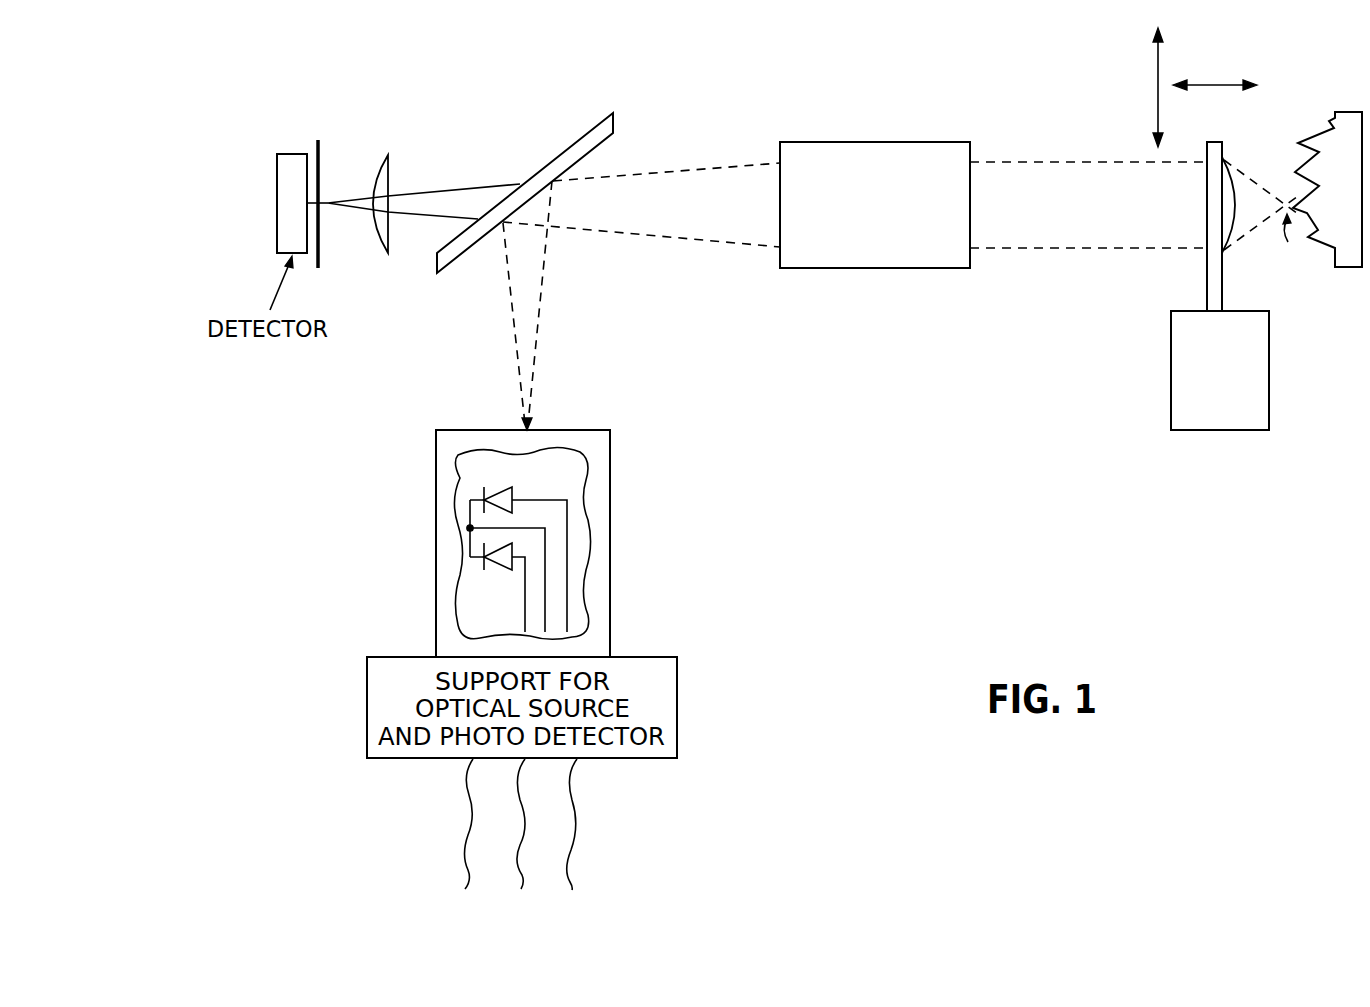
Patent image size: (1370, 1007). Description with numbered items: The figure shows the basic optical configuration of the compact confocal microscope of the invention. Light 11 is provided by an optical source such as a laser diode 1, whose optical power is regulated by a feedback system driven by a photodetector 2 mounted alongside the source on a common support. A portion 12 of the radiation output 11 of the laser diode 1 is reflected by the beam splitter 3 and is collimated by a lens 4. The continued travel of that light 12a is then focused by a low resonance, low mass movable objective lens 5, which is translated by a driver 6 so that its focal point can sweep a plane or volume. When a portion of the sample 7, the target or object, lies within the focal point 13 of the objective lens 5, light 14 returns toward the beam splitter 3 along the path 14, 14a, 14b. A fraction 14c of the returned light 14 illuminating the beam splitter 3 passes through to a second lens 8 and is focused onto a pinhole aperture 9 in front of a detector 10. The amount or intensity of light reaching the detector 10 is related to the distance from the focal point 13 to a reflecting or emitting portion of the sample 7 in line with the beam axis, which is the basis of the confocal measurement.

The laser diode 1 is at (502, 568).
The photodetector 2 is at (502, 491).
The beam splitter 3 is at (569, 144).
The lens 4 is at (880, 142).
The movable objective lens 5 is at (1213, 140).
The driver 6 is at (1171, 397).
The sample 7 is at (1348, 112).
The lens 8 is at (392, 149).
The pinhole aperture 9 is at (321, 141).
The detector 10 is at (288, 152).
The light 11 is at (1194, 226).
The portion of the radiation output 12 is at (693, 168).
The light 12a is at (1098, 162).
The focal point 13 is at (1268, 216).
The light 14 is at (1248, 228).
The path 14a is at (692, 241).
The path 14b is at (1097, 250).
The fraction of the incident returned light 14c is at (410, 221).